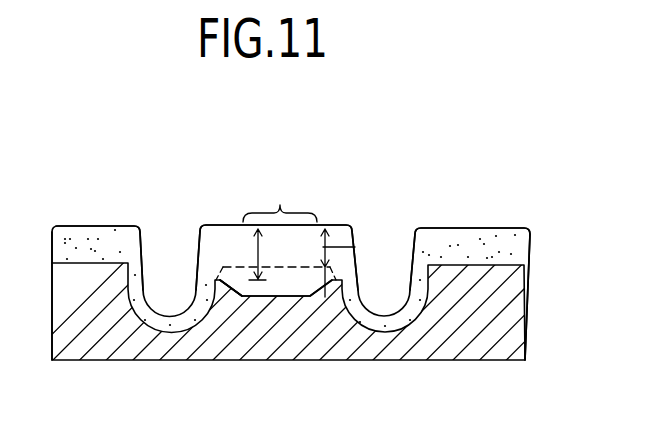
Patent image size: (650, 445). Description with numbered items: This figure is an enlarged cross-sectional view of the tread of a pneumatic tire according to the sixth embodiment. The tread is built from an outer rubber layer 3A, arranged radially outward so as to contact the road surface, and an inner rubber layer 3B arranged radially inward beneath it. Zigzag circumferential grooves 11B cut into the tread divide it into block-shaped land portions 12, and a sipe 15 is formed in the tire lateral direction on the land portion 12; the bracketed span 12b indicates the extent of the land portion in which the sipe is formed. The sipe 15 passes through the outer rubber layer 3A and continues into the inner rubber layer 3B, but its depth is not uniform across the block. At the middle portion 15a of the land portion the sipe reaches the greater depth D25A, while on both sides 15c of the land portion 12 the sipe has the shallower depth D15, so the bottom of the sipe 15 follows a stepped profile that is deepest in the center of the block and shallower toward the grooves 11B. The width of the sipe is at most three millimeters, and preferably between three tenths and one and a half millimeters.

The outer rubber layer 3A is at (528, 245).
The inner rubber layer 3B is at (527, 307).
The zigzag circumferential groove 11B is at (143, 237).
The land portion 12 is at (490, 228).
The opening 12b is at (280, 194).
The sipe 15 is at (222, 237).
The middle portion 15a is at (278, 298).
The both sides of the land portion 15c is at (224, 300).
The depth of the sipe on both sides D15 is at (289, 263).
The depth of the sipe at the middle portion D25A is at (355, 247).